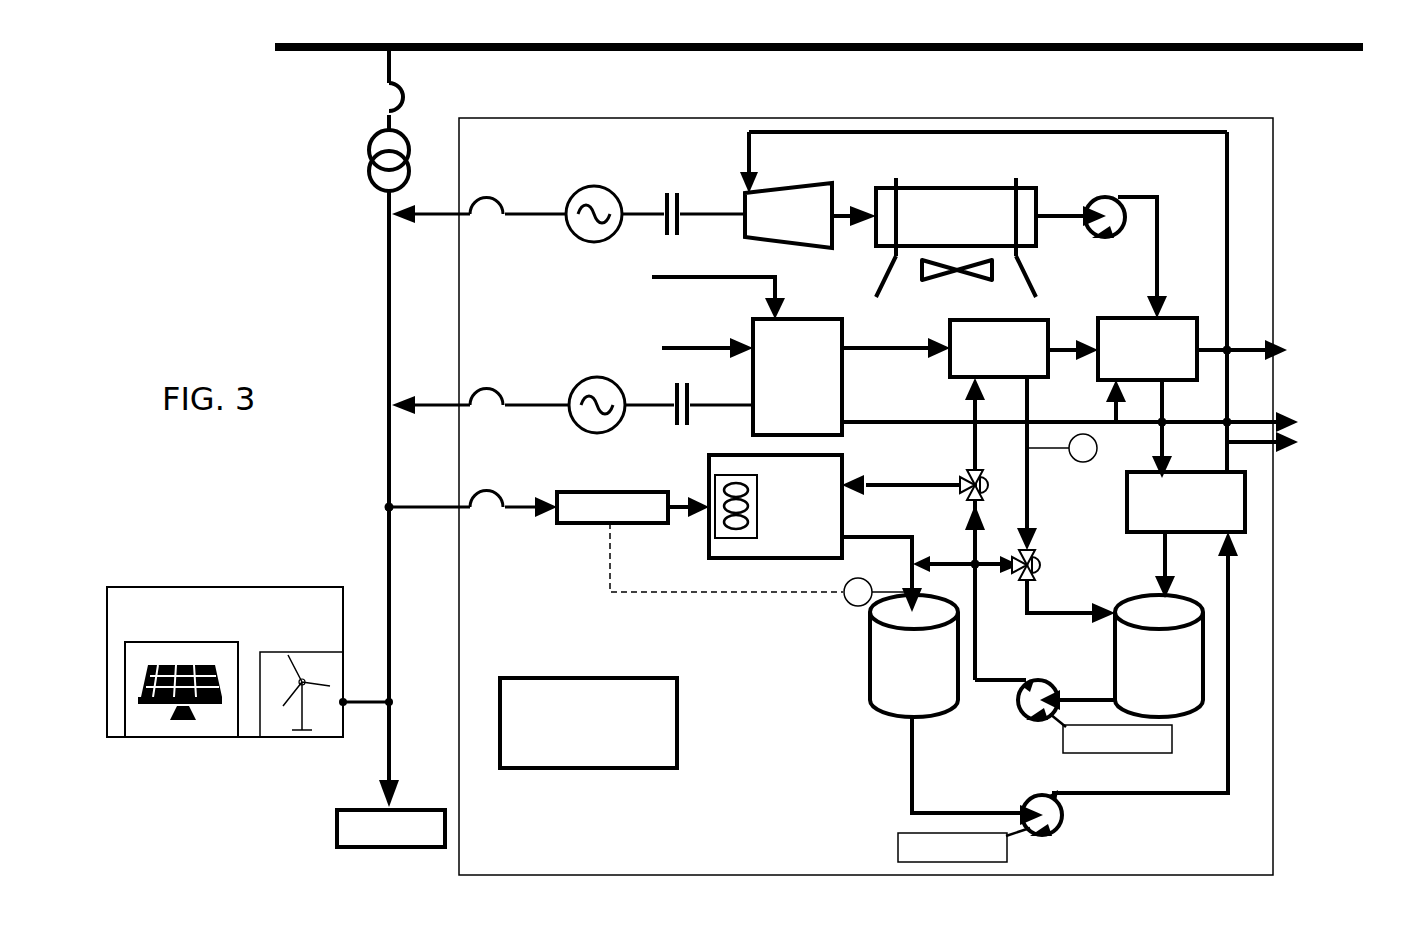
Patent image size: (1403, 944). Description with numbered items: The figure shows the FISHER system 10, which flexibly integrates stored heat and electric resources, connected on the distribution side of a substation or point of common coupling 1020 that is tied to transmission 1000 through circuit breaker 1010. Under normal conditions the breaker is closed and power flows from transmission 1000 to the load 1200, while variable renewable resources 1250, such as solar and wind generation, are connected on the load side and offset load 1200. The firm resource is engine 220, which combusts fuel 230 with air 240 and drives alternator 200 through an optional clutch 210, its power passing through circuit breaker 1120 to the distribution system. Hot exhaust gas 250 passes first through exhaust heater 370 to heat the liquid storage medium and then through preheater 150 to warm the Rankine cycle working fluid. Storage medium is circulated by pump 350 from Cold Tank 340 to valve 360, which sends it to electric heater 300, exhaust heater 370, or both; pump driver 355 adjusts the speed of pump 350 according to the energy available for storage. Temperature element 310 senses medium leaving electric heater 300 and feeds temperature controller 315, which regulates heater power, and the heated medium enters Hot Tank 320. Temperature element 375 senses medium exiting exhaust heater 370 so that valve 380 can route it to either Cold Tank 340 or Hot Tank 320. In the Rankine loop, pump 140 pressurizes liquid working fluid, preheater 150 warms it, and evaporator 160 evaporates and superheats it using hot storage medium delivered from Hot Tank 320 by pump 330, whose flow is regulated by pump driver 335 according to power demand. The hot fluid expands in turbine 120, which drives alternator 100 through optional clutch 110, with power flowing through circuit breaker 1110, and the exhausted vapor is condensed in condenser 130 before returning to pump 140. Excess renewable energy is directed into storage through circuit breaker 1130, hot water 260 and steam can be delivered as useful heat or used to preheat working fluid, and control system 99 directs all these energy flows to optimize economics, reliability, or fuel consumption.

The FISHER system 10 is at (866, 489).
The control system 99 is at (588, 723).
The alternator 100 is at (594, 206).
The clutch 110 is at (683, 203).
The turbine 120 is at (808, 190).
The condenser 130 is at (956, 231).
The pump 140 is at (1101, 246).
The preheater 150 is at (1229, 370).
The evaporator 160 is at (1186, 489).
The alternator 200 is at (597, 397).
The clutch 210 is at (689, 393).
The engine 220 is at (797, 377).
The fuel 230 is at (699, 343).
The air 240 is at (718, 288).
The exhaust gas 250 is at (896, 332).
The hot water 260 is at (1068, 302).
The electric heater 300 is at (815, 533).
The temperature element 310 is at (761, 570).
The temperature controller 315 is at (633, 507).
The Hot Tank 320 is at (946, 704).
The pump 330 is at (1129, 689).
The pump driver 335 is at (964, 845).
The Cold Tank 340 is at (1159, 656).
The pump 350 is at (1045, 715).
The pump driver 355 is at (1111, 733).
The valve 360 is at (930, 551).
The exhaust heater 370 is at (1024, 371).
The temperature element 375 is at (1057, 463).
The valve 380 is at (1063, 586).
The transmission 1000 is at (819, 33).
The circuit breaker 1010 is at (416, 89).
The substation or Point of Common Coupling 1020 is at (299, 468).
The circuit breaker 1110 is at (479, 202).
The circuit breaker 1120 is at (480, 393).
The circuit breaker 1130 is at (471, 495).
The load 1200 is at (391, 828).
The variable renewable resources 1250 is at (250, 662).